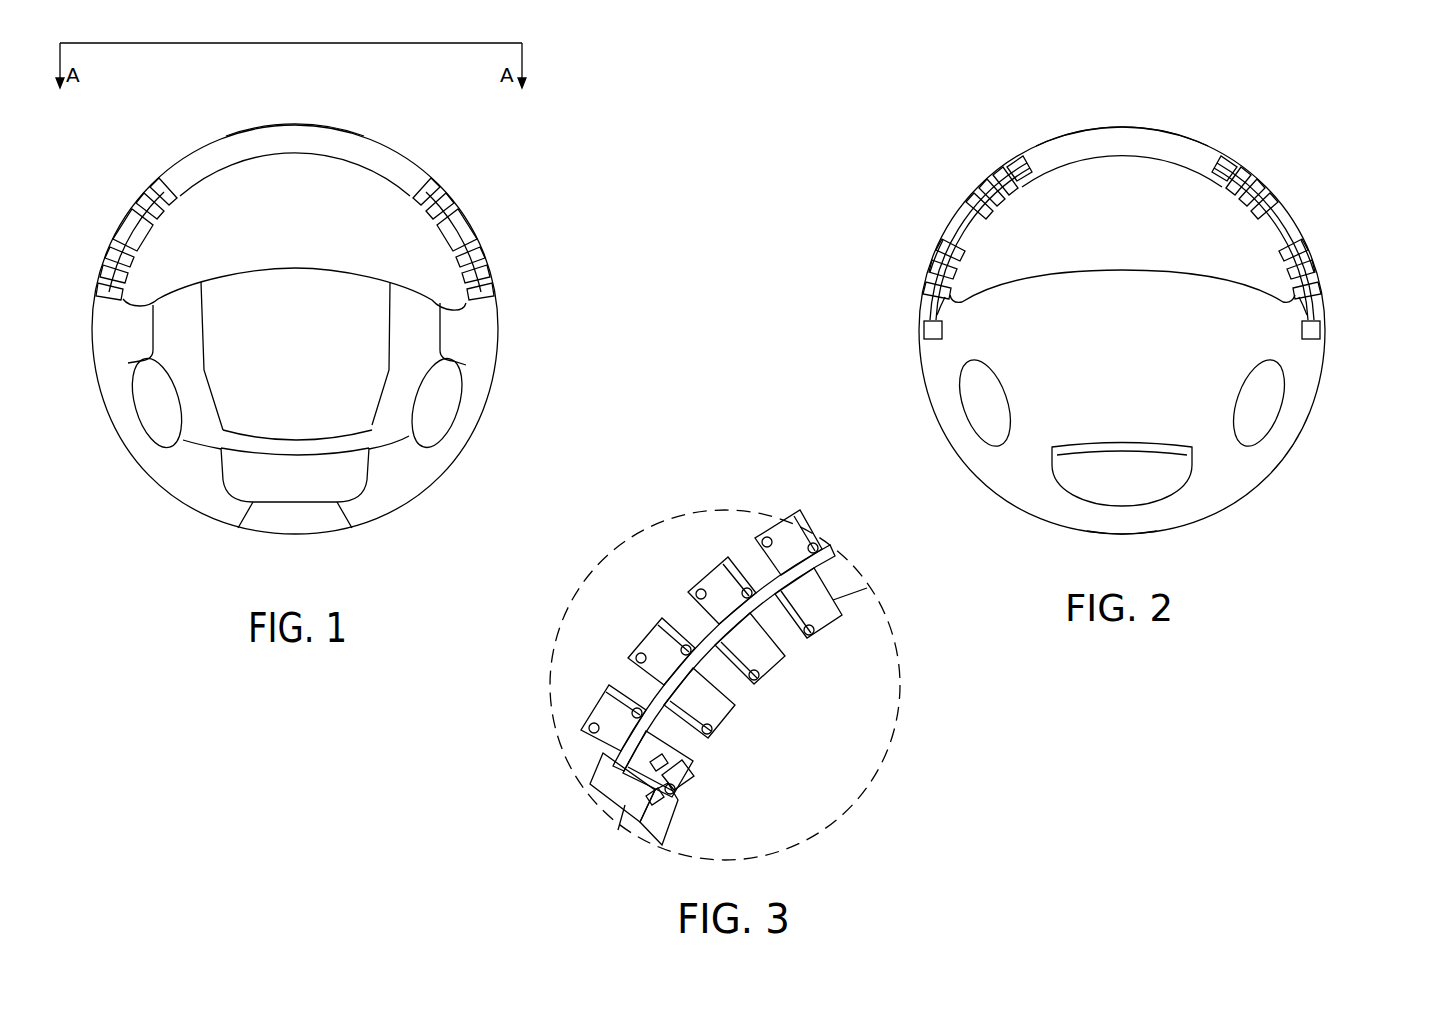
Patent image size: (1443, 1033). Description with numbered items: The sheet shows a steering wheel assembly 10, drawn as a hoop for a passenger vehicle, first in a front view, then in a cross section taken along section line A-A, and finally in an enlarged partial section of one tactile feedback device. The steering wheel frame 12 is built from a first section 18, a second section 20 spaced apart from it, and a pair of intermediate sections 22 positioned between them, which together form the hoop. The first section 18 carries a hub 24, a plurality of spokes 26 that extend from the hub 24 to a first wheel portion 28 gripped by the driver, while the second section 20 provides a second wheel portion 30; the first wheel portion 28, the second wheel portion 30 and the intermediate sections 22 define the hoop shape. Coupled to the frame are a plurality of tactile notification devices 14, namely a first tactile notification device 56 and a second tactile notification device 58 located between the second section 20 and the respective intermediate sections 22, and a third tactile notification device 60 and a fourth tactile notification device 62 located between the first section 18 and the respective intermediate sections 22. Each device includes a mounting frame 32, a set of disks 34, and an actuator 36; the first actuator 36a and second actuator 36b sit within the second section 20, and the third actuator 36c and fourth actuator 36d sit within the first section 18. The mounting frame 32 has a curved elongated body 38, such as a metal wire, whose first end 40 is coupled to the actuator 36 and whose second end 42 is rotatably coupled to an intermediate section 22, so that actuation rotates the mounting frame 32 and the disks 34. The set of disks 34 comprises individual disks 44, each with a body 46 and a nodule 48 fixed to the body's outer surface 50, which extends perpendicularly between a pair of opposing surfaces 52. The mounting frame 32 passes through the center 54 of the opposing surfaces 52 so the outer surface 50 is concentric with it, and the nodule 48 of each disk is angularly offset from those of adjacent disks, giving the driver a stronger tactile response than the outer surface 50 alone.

In FIG. 1, the steering wheel assembly 10 is at (511, 273).
In FIG. 2, the steering wheel assembly 10 is at (882, 190).
In FIG. 1, the steering wheel frame 12 is at (182, 148).
In FIG. 2, the steering wheel frame 12 is at (1200, 140).
In FIG. 1, the tactile notification devices 14 is at (135, 188).
In FIG. 2, the tactile notification devices 14 is at (967, 188).
In FIG. 3, the tactile notification devices 14 is at (640, 635).
In FIG. 1, the first section 18 is at (158, 488).
In FIG. 2, the first section 18 is at (968, 468).
In FIG. 1, the second section 20 is at (286, 127).
In FIG. 2, the second section 20 is at (1168, 130).
In FIG. 1, the intermediate sections 22 is at (117, 233).
In FIG. 2, the intermediate sections 22 is at (940, 242).
In FIG. 1, the hub 24 is at (291, 267).
In FIG. 2, the hub 24 is at (1120, 268).
In FIG. 1, the spokes 26 is at (140, 300).
In FIG. 2, the spokes 26 is at (965, 300).
In FIG. 1, the first wheel portion 28 is at (265, 532).
In FIG. 2, the first wheel portion 28 is at (1065, 534).
In FIG. 1, the second wheel portion 30 is at (388, 142).
In FIG. 2, the second wheel portion 30 is at (1120, 126).
In FIG. 2, the mounting frame 32 is at (1000, 176).
In FIG. 3, the mounting frame 32 is at (718, 620).
In FIG. 2, the set of disks 34 is at (957, 227).
In FIG. 3, the set of disks 34 is at (791, 662).
In FIG. 3, the actuator 36 is at (625, 806).
In FIG. 2, the first actuator 36a is at (1024, 158).
In FIG. 2, the second actuator 36b is at (1255, 142).
In FIG. 2, the third actuator 36c is at (924, 332).
In FIG. 2, the fourth actuator 36d is at (1320, 332).
In FIG. 3, the elongated body 38 is at (744, 588).
In FIG. 3, the first end 40 is at (604, 796).
In FIG. 3, the second end 42 is at (812, 565).
In FIG. 3, the disks 44 is at (732, 720).
In FIG. 3, the body 46 is at (610, 704).
In FIG. 3, the nodule 48 is at (633, 708).
In FIG. 3, the outer surface 50 is at (688, 780).
In FIG. 3, the opposing surfaces 52 is at (672, 758).
In FIG. 3, the center 54 is at (662, 815).
In FIG. 2, the first tactile notification device 56 is at (945, 208).
In FIG. 2, the second tactile notification device 58 is at (1268, 180).
In FIG. 2, the third tactile notification device 60 is at (920, 287).
In FIG. 2, the fourth tactile notification device 62 is at (1322, 287).